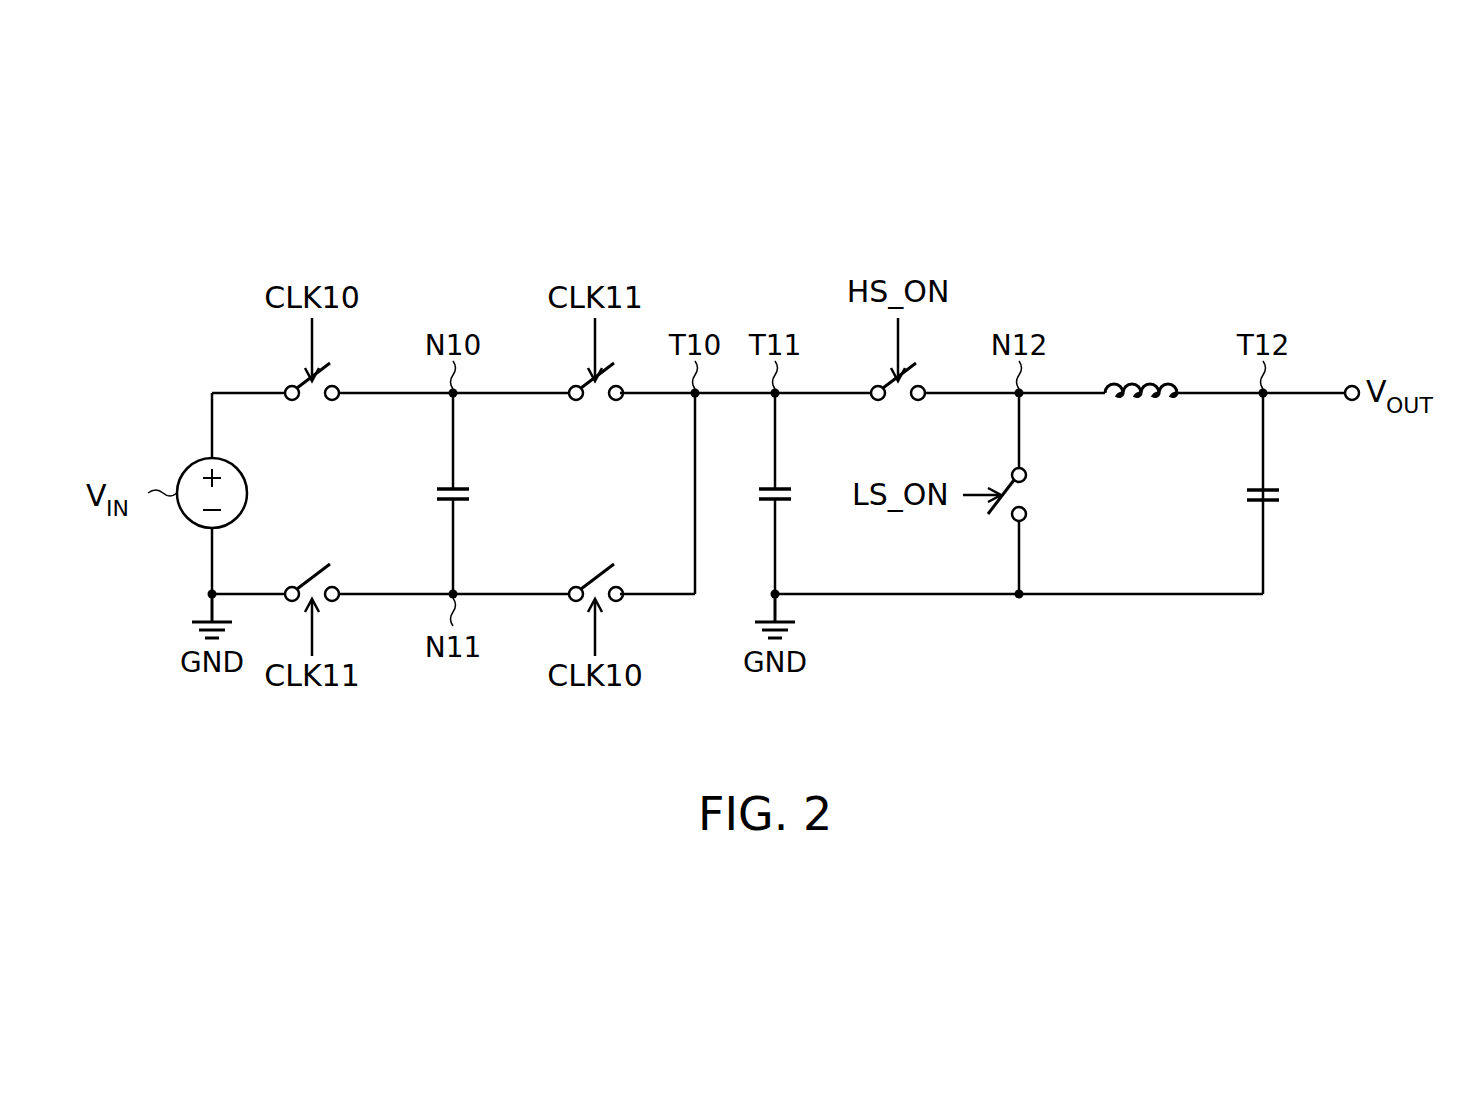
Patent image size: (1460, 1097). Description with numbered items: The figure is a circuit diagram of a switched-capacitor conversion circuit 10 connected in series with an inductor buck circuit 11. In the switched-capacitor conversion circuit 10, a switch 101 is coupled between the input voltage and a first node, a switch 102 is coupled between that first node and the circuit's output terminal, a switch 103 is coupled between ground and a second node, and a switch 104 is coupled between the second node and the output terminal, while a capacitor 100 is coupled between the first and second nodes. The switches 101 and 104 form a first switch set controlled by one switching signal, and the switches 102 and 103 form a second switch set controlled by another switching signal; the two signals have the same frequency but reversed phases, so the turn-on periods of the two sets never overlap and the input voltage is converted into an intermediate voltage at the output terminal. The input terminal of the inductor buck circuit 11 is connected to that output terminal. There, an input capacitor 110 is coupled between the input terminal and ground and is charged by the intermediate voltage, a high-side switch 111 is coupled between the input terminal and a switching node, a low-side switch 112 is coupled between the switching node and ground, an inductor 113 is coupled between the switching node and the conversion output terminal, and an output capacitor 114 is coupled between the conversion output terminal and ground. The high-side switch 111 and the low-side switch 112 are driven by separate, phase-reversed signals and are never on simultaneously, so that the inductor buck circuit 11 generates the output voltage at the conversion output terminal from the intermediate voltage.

The switched-capacitor conversion circuit 10 is at (480, 268).
The inductor buck circuit 11 is at (1051, 268).
The capacitor 100 is at (458, 486).
The switch 101 is at (312, 402).
The switch 102 is at (595, 402).
The switch 103 is at (310, 575).
The switch 104 is at (593, 575).
The input capacitor 110 is at (781, 486).
The high-side switch 111 is at (898, 402).
The low-side switch 112 is at (1026, 496).
The inductor 113 is at (1140, 377).
The output capacitor 114 is at (1268, 487).